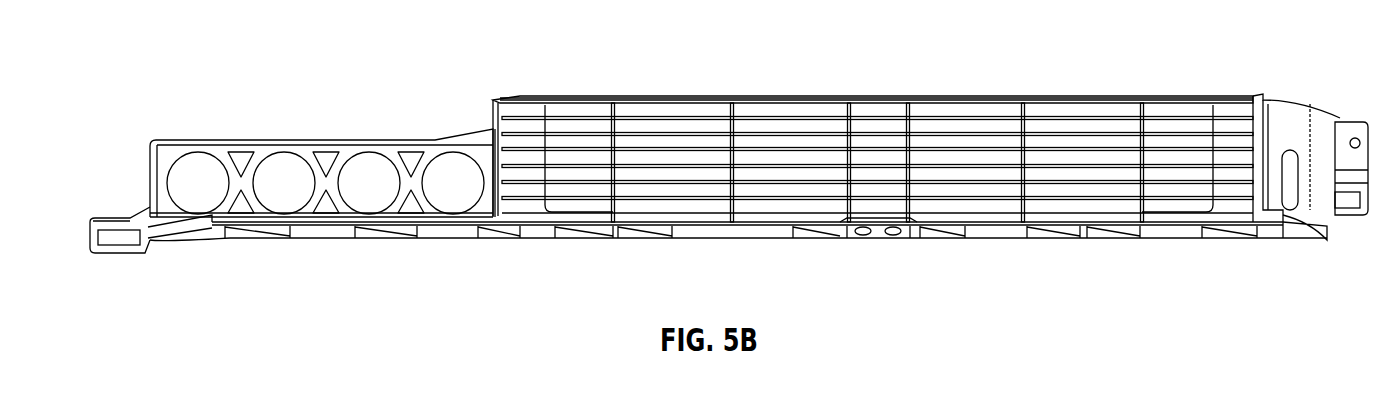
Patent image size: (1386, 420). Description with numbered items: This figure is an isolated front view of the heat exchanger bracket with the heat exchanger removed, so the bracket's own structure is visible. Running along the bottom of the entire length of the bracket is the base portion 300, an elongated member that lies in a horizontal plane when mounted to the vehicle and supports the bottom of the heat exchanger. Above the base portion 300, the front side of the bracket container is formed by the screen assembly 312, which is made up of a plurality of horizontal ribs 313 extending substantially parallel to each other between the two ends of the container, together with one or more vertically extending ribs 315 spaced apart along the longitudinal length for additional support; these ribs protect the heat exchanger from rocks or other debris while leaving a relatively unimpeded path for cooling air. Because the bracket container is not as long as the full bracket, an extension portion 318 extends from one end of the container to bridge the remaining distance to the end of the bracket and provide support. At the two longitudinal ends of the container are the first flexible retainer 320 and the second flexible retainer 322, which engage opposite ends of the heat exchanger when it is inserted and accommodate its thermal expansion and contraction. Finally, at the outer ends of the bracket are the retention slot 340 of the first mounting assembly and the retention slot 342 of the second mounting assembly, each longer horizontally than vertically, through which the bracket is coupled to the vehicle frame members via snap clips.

The base portion 300 is at (660, 220).
The screen assembly 312 is at (675, 108).
The horizontal ribs 313 is at (1075, 98).
The vertically extending ribs 315 is at (1022, 100).
The extension portion 318 is at (328, 187).
The first flexible retainer 320 is at (490, 173).
The second flexible retainer 322 is at (1268, 175).
The retention slot 340 is at (108, 237).
The retention slot 342 is at (1345, 200).